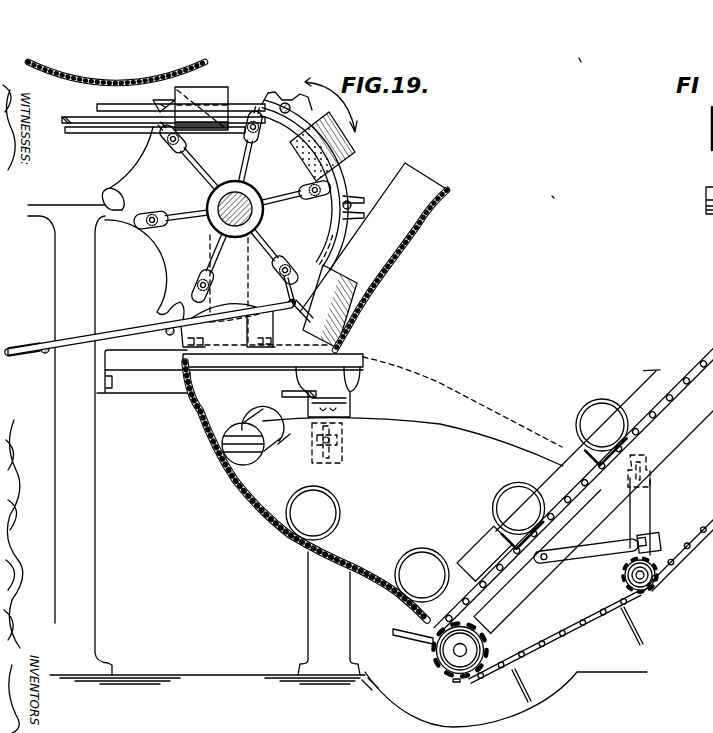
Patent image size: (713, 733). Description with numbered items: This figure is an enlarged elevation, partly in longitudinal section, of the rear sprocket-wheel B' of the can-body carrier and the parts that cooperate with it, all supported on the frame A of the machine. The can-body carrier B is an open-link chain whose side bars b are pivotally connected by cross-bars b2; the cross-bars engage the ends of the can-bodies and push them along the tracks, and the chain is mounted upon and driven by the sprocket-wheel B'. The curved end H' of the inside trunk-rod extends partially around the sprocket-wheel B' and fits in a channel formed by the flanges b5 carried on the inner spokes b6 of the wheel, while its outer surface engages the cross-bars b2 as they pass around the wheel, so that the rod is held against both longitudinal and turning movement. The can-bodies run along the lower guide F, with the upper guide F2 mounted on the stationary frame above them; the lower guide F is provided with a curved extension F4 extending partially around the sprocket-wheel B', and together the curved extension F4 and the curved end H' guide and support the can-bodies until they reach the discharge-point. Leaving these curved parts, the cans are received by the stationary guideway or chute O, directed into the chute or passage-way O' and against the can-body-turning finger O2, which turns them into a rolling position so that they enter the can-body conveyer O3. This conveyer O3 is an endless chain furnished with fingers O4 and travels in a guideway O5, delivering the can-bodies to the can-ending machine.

The frame A is at (55, 434).
The can-body carrier B is at (149, 328).
The rear sprocket-wheel B' is at (261, 225).
The side bars b is at (25, 357).
The cross-bars b2 is at (43, 357).
The flanges b5 is at (140, 229).
The inner spokes b6 is at (197, 170).
The can-body guide F is at (123, 129).
The upper guide F2 is at (152, 60).
The curved extension F4 is at (287, 143).
The curved end H' is at (333, 230).
The stationary guideway or chute O is at (374, 256).
The chute or passage-way O' is at (360, 488).
The can-body-turning finger O2 is at (289, 391).
The can-body conveyer O3 is at (543, 580).
The fingers O4 is at (402, 628).
The guideway O5 is at (555, 462).